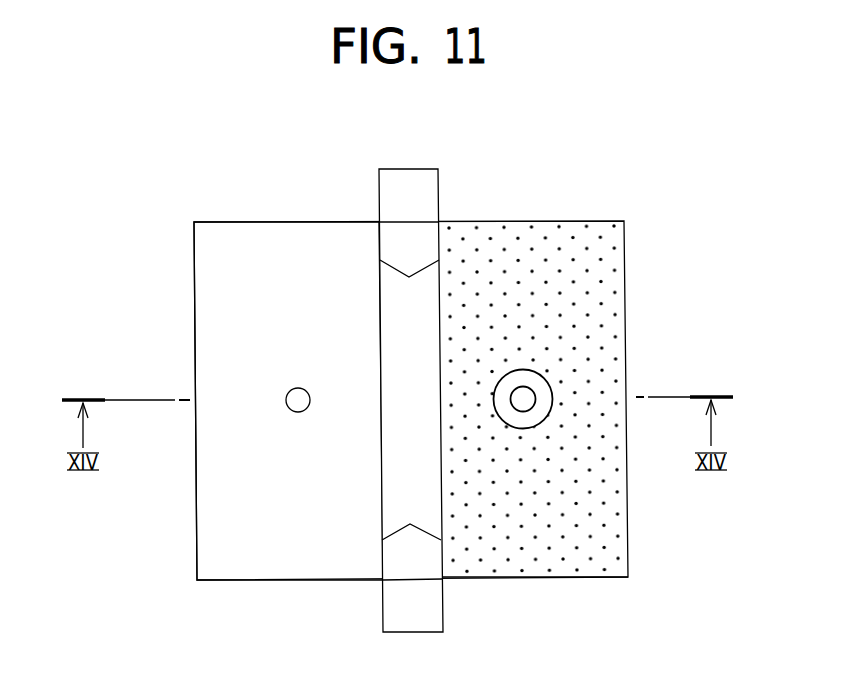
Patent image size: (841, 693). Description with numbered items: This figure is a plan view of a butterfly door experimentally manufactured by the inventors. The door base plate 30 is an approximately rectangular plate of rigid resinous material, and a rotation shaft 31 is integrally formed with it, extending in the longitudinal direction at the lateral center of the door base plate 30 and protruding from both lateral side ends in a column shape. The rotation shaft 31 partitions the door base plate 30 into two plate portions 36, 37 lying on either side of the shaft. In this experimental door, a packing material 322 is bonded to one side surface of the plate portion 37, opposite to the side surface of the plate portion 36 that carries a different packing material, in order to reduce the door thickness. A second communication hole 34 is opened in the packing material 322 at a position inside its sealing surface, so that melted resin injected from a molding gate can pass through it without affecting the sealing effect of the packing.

The door base plate 30 is at (193, 550).
The rotation shaft 31 is at (379, 199).
The packing material 322 is at (541, 250).
The second communication hole 34 is at (520, 368).
The plate portion 36 is at (285, 540).
The plate portion 37 is at (577, 578).